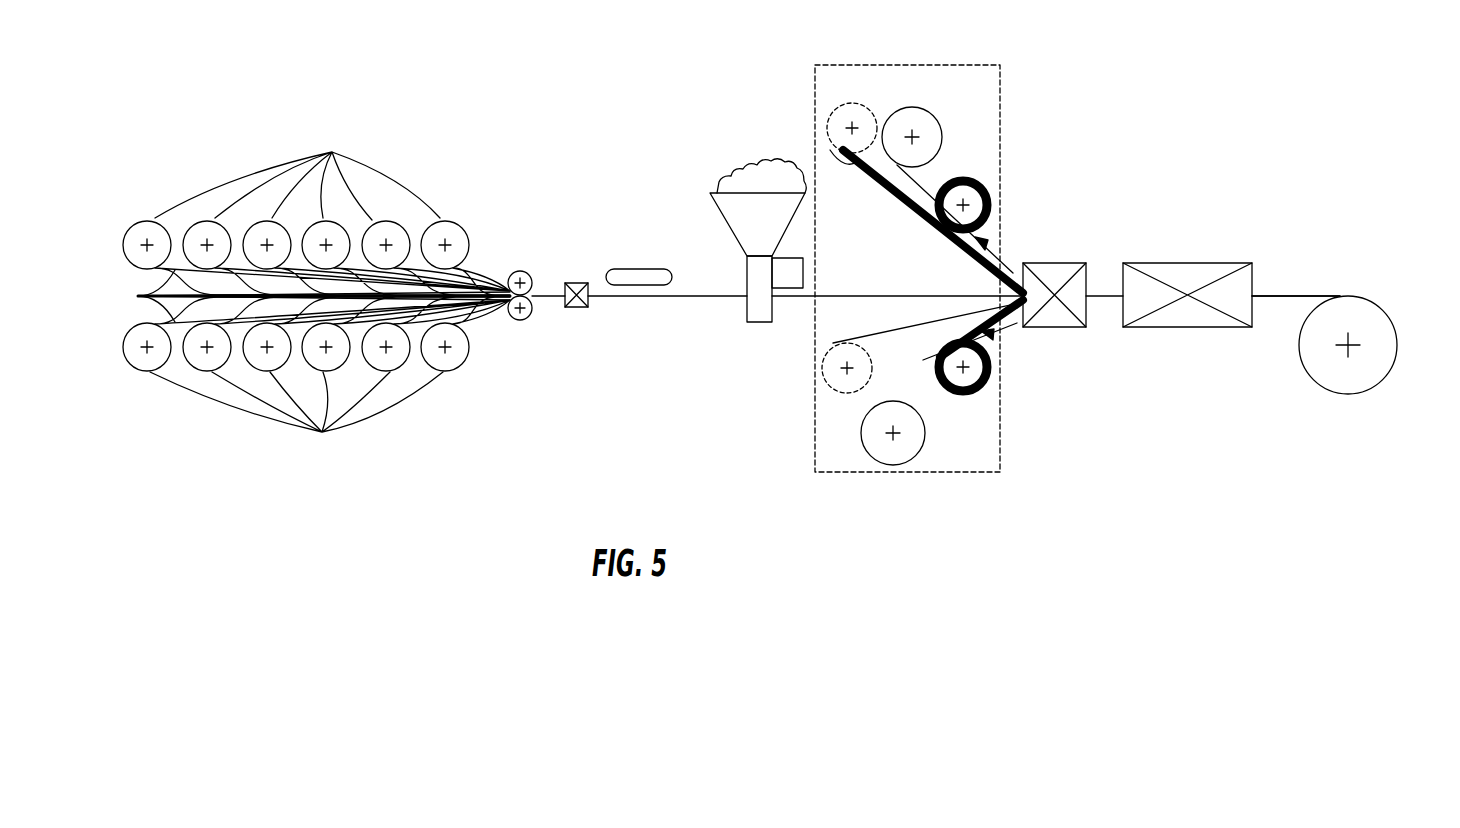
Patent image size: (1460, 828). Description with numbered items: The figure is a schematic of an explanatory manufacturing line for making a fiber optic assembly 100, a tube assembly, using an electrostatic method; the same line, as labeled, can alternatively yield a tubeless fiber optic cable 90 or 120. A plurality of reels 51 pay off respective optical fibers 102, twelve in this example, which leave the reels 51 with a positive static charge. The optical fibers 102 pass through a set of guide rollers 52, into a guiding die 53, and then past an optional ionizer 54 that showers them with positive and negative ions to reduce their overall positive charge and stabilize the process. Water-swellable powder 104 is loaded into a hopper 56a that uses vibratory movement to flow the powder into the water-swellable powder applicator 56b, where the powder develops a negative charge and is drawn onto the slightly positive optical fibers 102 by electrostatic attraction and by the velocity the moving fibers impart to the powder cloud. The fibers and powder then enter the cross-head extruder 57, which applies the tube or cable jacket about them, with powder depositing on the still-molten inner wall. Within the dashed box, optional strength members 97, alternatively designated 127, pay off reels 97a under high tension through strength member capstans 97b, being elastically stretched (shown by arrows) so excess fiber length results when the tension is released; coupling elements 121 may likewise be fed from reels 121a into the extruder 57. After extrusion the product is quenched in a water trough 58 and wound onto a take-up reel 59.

The reels 51 is at (296, 294).
The optical fibers 102 is at (306, 296).
The guide rollers 52 is at (528, 318).
The guiding die 53 is at (582, 307).
The ionizer 54 is at (623, 270).
The hopper 56a is at (723, 217).
The water-swellable powder applicator 56b is at (743, 313).
The water-swellable powder 104 is at (768, 160).
The coupling elements 121 is at (883, 333).
The reels 121a is at (838, 392).
The reels 97a is at (925, 438).
The strength member capstans 97b is at (982, 387).
The strength members 97 is at (928, 258).
The web 127 is at (921, 366).
The extruder 57 is at (1053, 263).
The water trough 58 is at (1187, 263).
The fiber optic assembly 100 is at (1337, 248).
The tubeless fiber optic cable 90 is at (1337, 248).
The composite web 120 is at (1313, 295).
The take-up reel 59 is at (1383, 377).